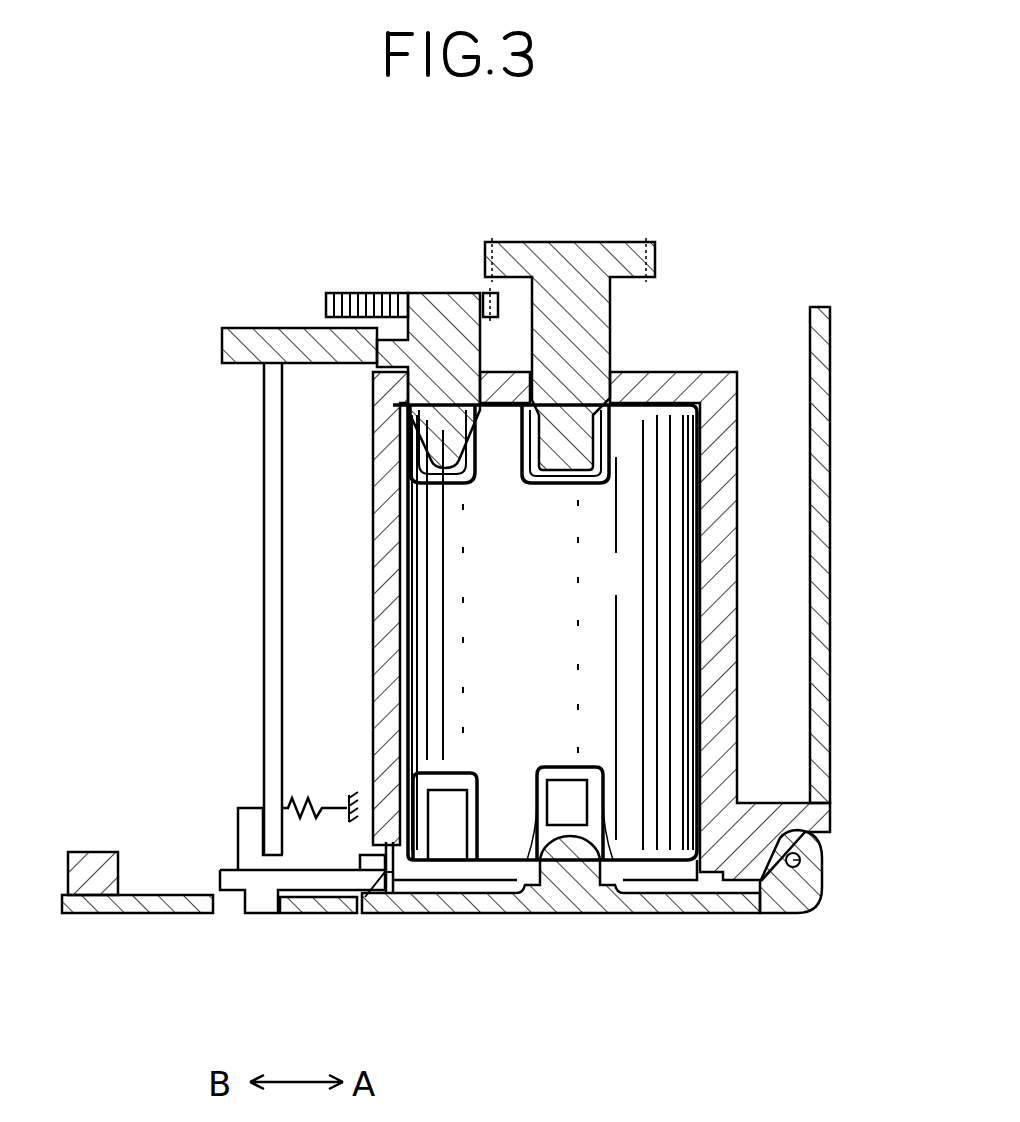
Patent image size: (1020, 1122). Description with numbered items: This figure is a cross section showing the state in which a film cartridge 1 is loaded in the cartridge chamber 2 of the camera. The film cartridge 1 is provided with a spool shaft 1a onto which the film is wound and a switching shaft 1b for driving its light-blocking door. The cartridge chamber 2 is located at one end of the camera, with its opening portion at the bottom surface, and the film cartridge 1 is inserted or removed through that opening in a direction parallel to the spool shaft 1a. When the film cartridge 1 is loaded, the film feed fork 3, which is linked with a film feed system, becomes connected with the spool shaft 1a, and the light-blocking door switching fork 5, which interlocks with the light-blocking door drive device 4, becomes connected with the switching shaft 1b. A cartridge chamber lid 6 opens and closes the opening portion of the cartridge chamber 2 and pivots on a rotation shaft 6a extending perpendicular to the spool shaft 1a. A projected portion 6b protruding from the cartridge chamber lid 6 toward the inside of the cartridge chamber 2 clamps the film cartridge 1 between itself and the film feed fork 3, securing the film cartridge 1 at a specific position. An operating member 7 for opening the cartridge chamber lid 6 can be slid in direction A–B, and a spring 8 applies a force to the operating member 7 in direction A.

The film cartridge 1 is at (430, 590).
The spool shaft 1a is at (597, 452).
The switching shaft 1b is at (457, 468).
The cartridge chamber 2 is at (705, 400).
The film feed fork 3 is at (565, 262).
The light-blocking door drive device 4 is at (340, 292).
The light-blocking door switching fork 5 is at (437, 292).
The cartridge chamber lid 6 is at (562, 900).
The rotation shaft 6a is at (822, 850).
The projected portion 6b is at (605, 833).
The operating member 7 is at (265, 905).
The spring 8 is at (295, 797).